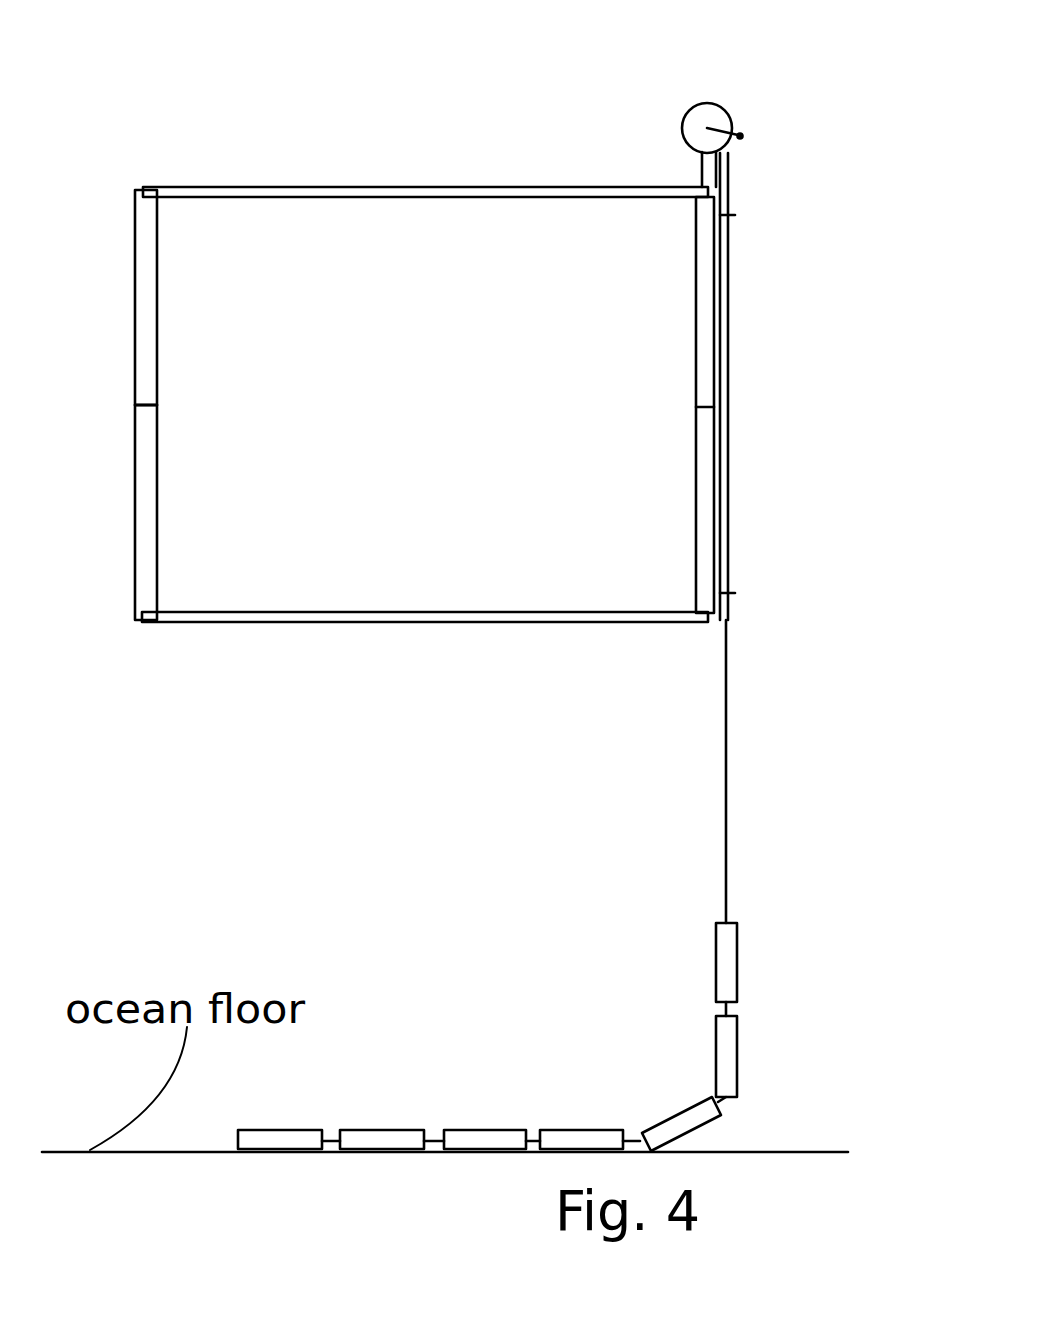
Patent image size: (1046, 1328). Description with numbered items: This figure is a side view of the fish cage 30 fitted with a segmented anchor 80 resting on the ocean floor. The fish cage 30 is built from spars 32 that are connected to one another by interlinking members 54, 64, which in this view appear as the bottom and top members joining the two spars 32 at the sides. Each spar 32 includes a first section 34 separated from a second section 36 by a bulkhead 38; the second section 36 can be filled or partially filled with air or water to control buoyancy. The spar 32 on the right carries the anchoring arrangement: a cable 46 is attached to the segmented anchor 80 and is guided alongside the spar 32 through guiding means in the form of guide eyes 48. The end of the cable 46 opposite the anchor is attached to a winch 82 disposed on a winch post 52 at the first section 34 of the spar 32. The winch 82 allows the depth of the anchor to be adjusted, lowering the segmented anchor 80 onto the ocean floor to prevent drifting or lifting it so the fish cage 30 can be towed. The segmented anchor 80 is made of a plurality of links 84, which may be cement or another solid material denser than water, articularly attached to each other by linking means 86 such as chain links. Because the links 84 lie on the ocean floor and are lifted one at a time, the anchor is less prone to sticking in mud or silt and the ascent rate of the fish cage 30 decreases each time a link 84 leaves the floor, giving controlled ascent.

The fish cage 30 is at (319, 80).
The spar 32 is at (157, 323).
The first section 34 is at (135, 253).
The second section 36 is at (133, 492).
The bulkhead 38 is at (183, 393).
The cable 46 is at (728, 447).
The guide eye 48 is at (735, 215).
The winch post 52 is at (700, 178).
The interlinking member 54 is at (477, 612).
The interlinking member 64 is at (368, 188).
The segmented anchor 80 is at (582, 1130).
The winch 82 is at (708, 103).
The link 84 is at (560, 1130).
The linking means 86 is at (720, 1008).